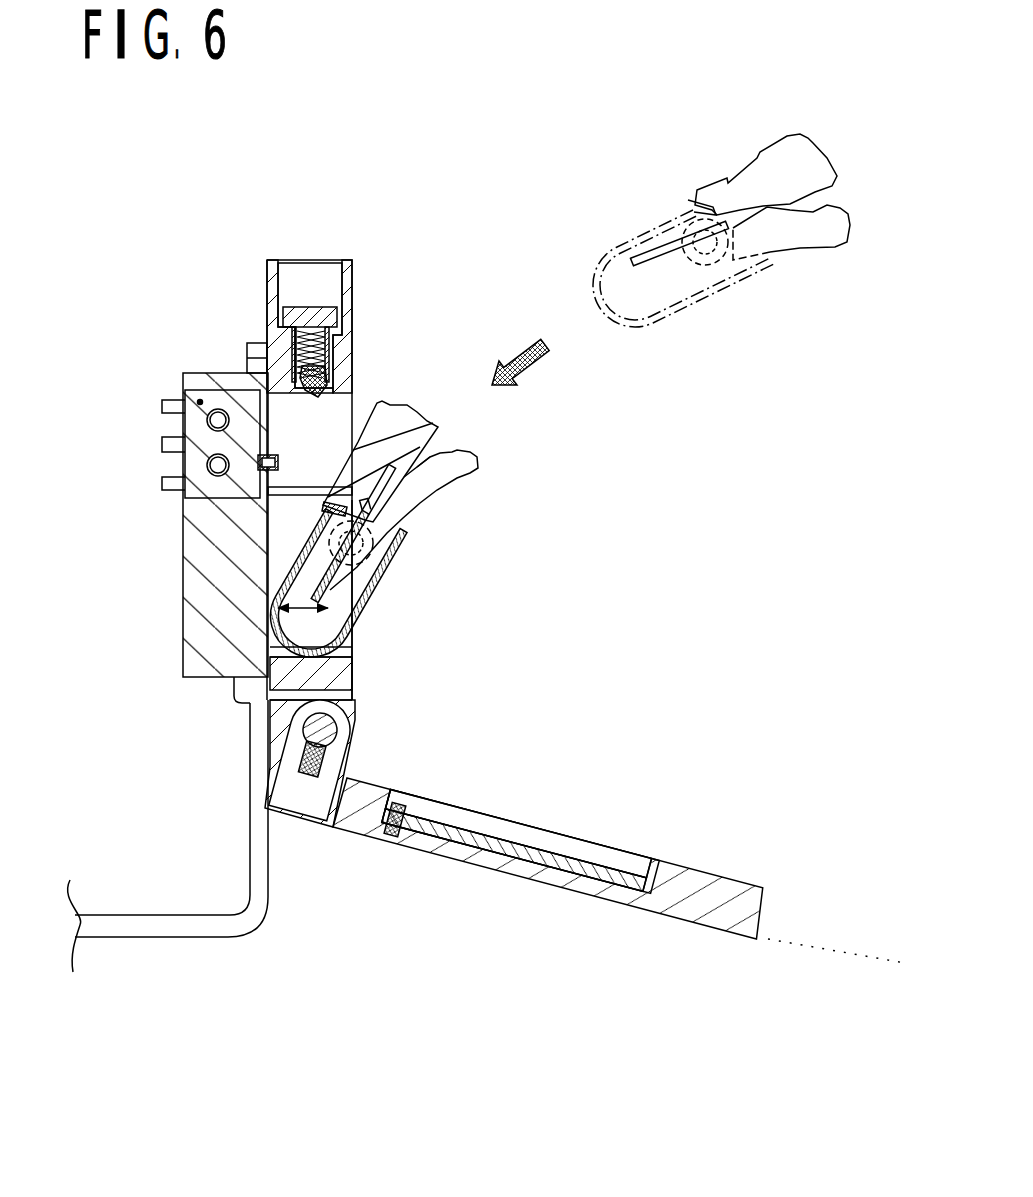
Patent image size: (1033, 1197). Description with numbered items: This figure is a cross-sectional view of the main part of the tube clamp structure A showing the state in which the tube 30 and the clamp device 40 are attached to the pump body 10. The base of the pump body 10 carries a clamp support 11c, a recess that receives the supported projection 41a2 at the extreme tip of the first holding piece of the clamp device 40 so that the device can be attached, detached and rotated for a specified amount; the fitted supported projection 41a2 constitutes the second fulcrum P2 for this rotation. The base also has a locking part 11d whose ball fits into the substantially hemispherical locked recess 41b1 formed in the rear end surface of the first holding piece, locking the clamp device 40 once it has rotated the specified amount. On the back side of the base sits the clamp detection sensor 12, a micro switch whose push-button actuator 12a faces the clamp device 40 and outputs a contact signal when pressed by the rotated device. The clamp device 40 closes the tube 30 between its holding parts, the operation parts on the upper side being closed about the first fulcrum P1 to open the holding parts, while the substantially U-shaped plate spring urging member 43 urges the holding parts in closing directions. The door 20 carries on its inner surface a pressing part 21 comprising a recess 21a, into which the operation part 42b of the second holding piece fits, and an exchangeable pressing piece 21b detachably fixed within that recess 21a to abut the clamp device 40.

The tube clamp structure A is at (233, 246).
The pump body 10 is at (354, 257).
The clamp support 11c is at (346, 618).
The locking part 11d is at (322, 399).
The clamp detection sensor 12 is at (198, 401).
The actuator 12a is at (186, 497).
The door 20 is at (760, 940).
The pressing part 21 is at (668, 685).
The recess 21a is at (499, 842).
The pressing piece 21b is at (574, 841).
The tube 30 is at (374, 546).
The clamp device 40 is at (580, 302).
The supported projection 41a2 is at (268, 645).
The locked recess 41b1 is at (425, 414).
The operation part 42b is at (451, 505).
The urging member 43 is at (342, 587).
The first fulcrum P1 is at (430, 452).
The second fulcrum P2 is at (302, 618).